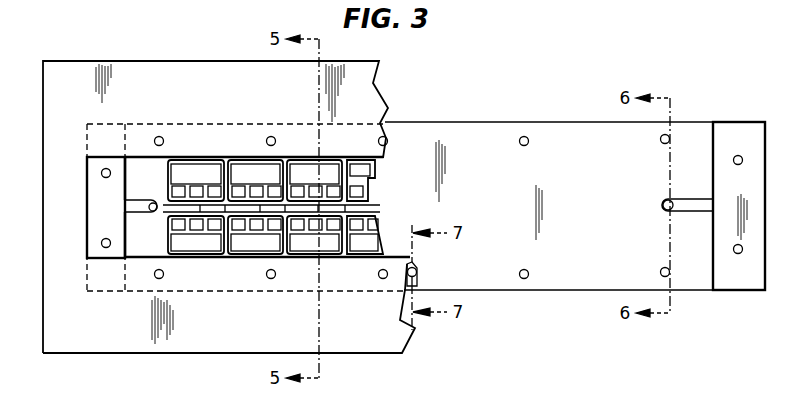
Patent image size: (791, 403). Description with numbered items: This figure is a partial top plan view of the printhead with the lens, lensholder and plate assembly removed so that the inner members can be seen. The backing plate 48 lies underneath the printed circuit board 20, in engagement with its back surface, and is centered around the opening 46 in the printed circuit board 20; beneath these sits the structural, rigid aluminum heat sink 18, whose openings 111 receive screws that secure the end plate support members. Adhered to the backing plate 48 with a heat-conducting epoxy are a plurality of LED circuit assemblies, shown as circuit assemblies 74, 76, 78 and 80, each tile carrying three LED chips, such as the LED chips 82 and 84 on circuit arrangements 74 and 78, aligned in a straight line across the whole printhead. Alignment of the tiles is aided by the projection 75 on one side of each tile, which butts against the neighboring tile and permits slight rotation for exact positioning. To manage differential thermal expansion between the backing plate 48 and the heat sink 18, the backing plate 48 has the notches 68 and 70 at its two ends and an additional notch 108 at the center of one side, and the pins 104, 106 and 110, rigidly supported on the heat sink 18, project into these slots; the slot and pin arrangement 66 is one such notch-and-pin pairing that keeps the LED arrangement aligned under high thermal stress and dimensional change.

The printed circuit board 20 is at (183, 72).
The backing plate 48 is at (120, 160).
The heat sink 18 is at (96, 233).
The openings 111 is at (101, 173).
The slot and pin arrangement 66 is at (131, 192).
The notch 70 is at (148, 206).
The pin 110 is at (153, 211).
The opening 46 is at (152, 258).
The LED circuit assembly 74 is at (186, 192).
The LED circuit assembly 78 is at (307, 185).
The projection 75 is at (358, 184).
The LED circuit assembly 80 is at (375, 188).
The LED chip 82 is at (204, 234).
The LED circuit assembly 76 is at (268, 233).
The LED chip 84 is at (301, 229).
The pin 106 is at (420, 270).
The notch 108 is at (415, 280).
The notch 68 is at (690, 198).
The pin 104 is at (662, 205).